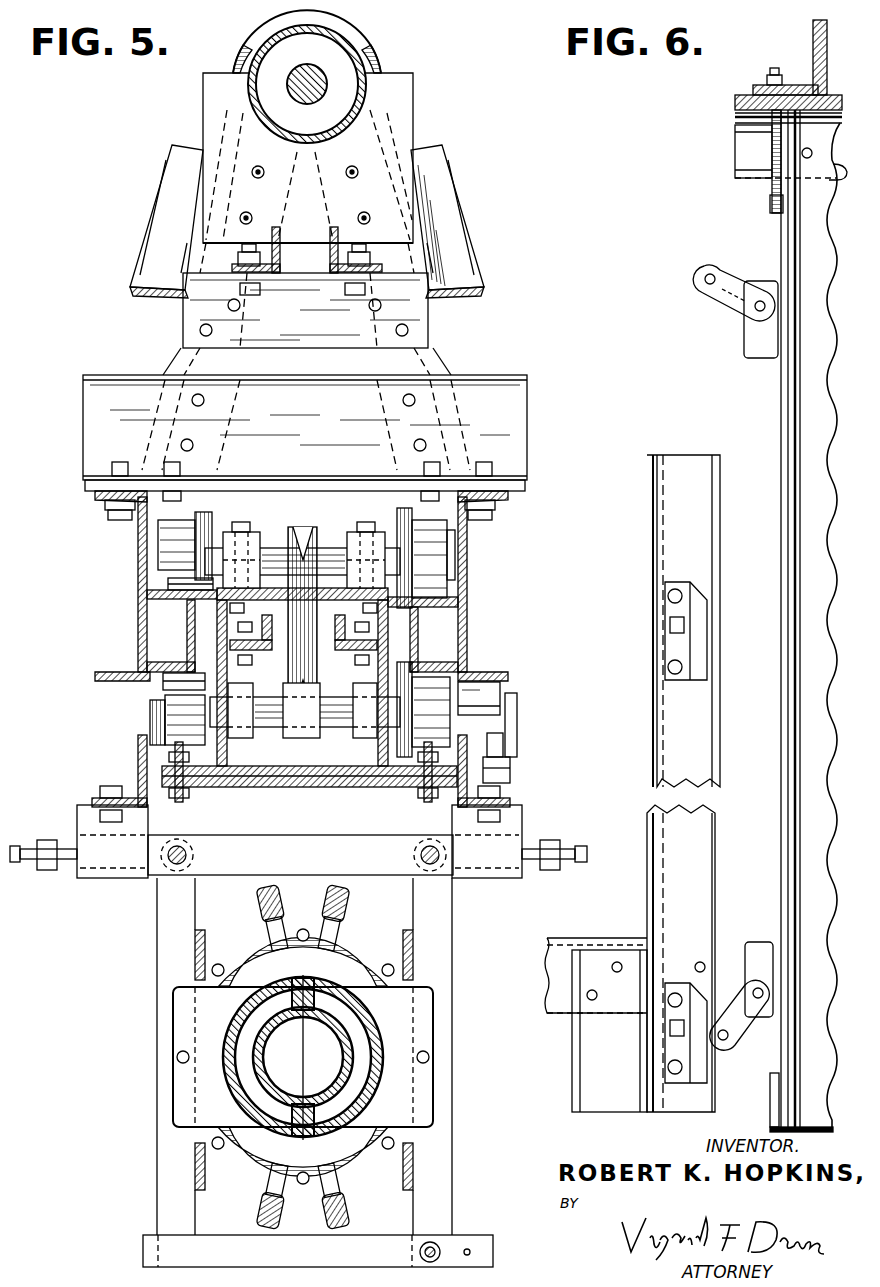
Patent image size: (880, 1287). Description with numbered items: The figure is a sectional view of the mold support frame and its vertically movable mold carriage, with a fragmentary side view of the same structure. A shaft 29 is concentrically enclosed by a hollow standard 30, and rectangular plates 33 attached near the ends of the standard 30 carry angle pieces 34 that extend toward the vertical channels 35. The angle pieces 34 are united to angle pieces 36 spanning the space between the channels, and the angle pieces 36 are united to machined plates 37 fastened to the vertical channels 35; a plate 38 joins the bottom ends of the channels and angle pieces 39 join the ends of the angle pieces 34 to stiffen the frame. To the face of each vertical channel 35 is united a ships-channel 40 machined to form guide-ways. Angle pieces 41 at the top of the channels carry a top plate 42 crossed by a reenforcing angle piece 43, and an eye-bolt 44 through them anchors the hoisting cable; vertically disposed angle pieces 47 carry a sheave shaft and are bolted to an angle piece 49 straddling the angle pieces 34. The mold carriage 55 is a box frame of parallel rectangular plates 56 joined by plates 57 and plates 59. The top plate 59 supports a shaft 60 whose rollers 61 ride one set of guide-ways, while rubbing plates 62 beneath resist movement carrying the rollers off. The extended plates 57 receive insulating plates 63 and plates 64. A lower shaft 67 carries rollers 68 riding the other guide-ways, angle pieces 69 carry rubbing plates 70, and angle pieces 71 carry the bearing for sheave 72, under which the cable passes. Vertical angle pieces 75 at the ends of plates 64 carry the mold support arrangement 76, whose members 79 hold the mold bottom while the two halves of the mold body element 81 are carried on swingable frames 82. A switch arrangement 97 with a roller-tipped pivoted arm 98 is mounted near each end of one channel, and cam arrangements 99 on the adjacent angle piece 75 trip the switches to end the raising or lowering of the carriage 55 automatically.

In FIG. 5, the shaft 29 is at (320, 78).
In FIG. 5, the hollow standard 30 is at (262, 48).
In FIG. 5, the rectangular plates 33 is at (225, 96).
In FIG. 5, the angle pieces 34 is at (188, 364).
In FIG. 5, the vertical channels 35 is at (140, 560).
In FIG. 6, the vertical channels 35 is at (805, 447).
In FIG. 5, the angle pieces 36 is at (494, 418).
In FIG. 5, the plates 37 is at (90, 490).
In FIG. 6, the plate 38 is at (775, 1108).
In FIG. 5, the angle pieces 39 is at (167, 228).
In FIG. 5, the ships-channel 40 is at (170, 668).
In FIG. 6, the angle pieces 41 is at (750, 147).
In FIG. 6, the top plate 42 is at (737, 101).
In FIG. 6, the reenforcing angle piece 43 is at (816, 48).
In FIG. 6, the eye-bolt 44 is at (772, 188).
In FIG. 5, the vertically disposed angle pieces 47 is at (330, 252).
In FIG. 5, the angle piece 49 is at (420, 308).
In FIG. 5, the mold carriage 55 is at (316, 495).
In FIG. 5, the rectangular plates 56 is at (217, 620).
In FIG. 5, the plates 57 is at (293, 767).
In FIG. 5, the plates 59 is at (392, 612).
In FIG. 5, the shaft 60 is at (275, 556).
In FIG. 5, the rollers 61 is at (180, 553).
In FIG. 5, the rubbing plates 62 is at (170, 592).
In FIG. 5, the plates 63 is at (325, 790).
In FIG. 5, the plates 64 is at (253, 790).
In FIG. 5, the shaft 67 is at (338, 713).
In FIG. 5, the rollers 68 is at (397, 790).
In FIG. 5, the angle pieces 69 is at (160, 705).
In FIG. 5, the rubbing plates 70 is at (165, 682).
In FIG. 5, the angle pieces 71 is at (280, 652).
In FIG. 5, the sheave 72 is at (318, 540).
In FIG. 5, the vertical angle pieces 75 is at (140, 758).
In FIG. 6, the vertical angle pieces 75 is at (695, 537).
In FIG. 5, the mold support arrangement 76 is at (150, 1093).
In FIG. 6, the members 79 is at (562, 998).
In FIG. 5, the mold body element 81 is at (273, 988).
In FIG. 5, the frames 82 is at (177, 955).
In FIG. 5, the switch arrangement 97 is at (485, 697).
In FIG. 6, the switch arrangement 97 is at (760, 330).
In FIG. 5, the pivoted arm 98 is at (514, 727).
In FIG. 6, the pivoted arm 98 is at (733, 302).
In FIG. 5, the cam arrangements 99 is at (506, 770).
In FIG. 6, the cam arrangements 99 is at (697, 634).